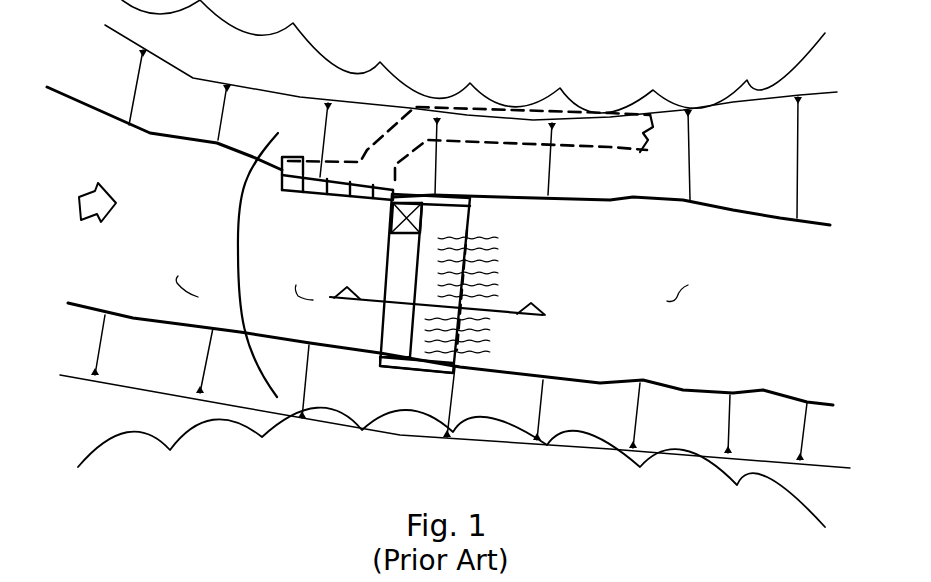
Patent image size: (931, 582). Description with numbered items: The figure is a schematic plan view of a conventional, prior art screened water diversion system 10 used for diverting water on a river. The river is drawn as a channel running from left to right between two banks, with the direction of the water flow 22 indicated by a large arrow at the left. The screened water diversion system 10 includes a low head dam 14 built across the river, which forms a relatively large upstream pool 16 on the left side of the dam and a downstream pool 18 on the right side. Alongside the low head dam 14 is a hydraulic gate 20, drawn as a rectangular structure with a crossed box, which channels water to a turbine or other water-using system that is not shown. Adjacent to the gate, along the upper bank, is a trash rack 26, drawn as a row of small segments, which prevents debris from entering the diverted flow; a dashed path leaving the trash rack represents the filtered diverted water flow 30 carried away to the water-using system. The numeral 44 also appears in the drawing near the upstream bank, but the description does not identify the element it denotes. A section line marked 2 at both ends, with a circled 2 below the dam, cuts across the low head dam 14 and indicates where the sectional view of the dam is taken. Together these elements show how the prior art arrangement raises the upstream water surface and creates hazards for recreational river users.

The screened water diversion system 10 is at (240, 204).
The low head dam 14 is at (415, 333).
The upstream pool 16 is at (313, 300).
The downstream pool 18 is at (677, 297).
The hydraulic gate 20 is at (425, 215).
The water flow 22 is at (93, 217).
The trash rack 26 is at (306, 167).
The filtered diverted water flow 30 is at (637, 136).
The upstream region 44 is at (198, 297).
The section line 2- 2 is at (447, 483).